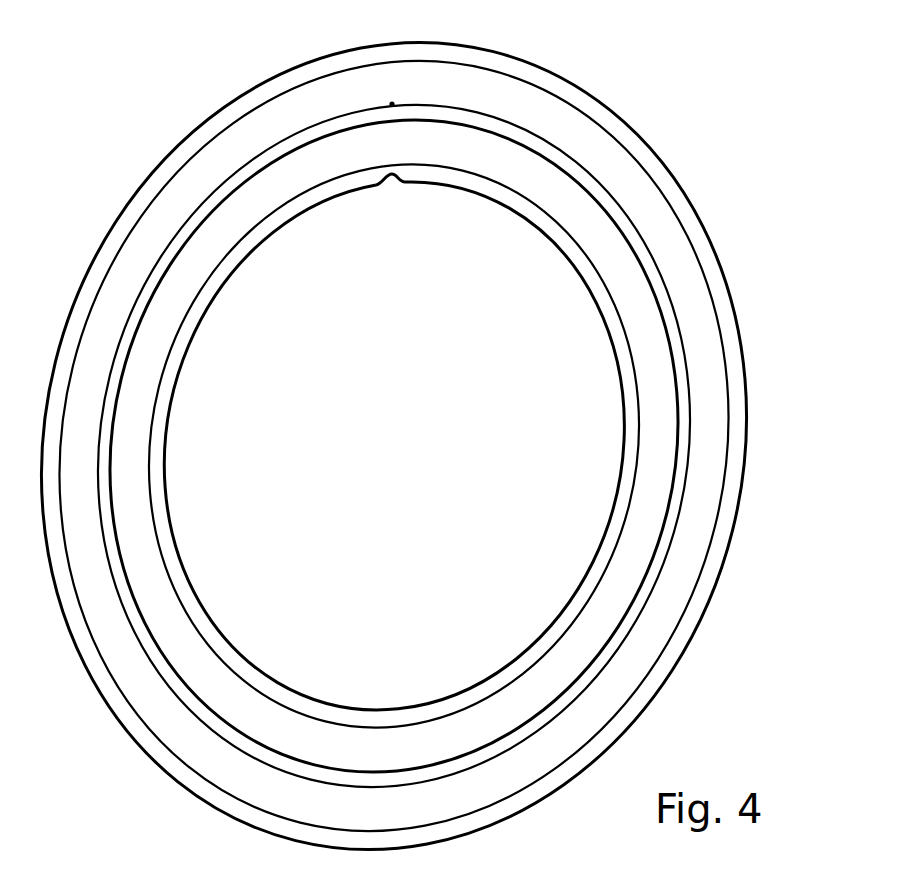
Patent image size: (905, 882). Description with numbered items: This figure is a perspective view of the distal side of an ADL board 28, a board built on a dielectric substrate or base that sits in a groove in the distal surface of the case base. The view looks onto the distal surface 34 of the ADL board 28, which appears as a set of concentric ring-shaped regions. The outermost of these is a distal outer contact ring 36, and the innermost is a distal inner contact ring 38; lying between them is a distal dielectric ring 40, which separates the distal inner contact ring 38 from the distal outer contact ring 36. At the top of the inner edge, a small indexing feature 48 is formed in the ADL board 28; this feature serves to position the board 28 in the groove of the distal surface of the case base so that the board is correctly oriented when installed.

The ADL board 28 is at (716, 133).
The distal surface 34 is at (704, 545).
The distal outer contact ring 36 is at (687, 273).
The distal dielectric ring 40 is at (672, 329).
The distal inner contact ring 38 is at (657, 390).
The indexing feature 48 is at (392, 184).